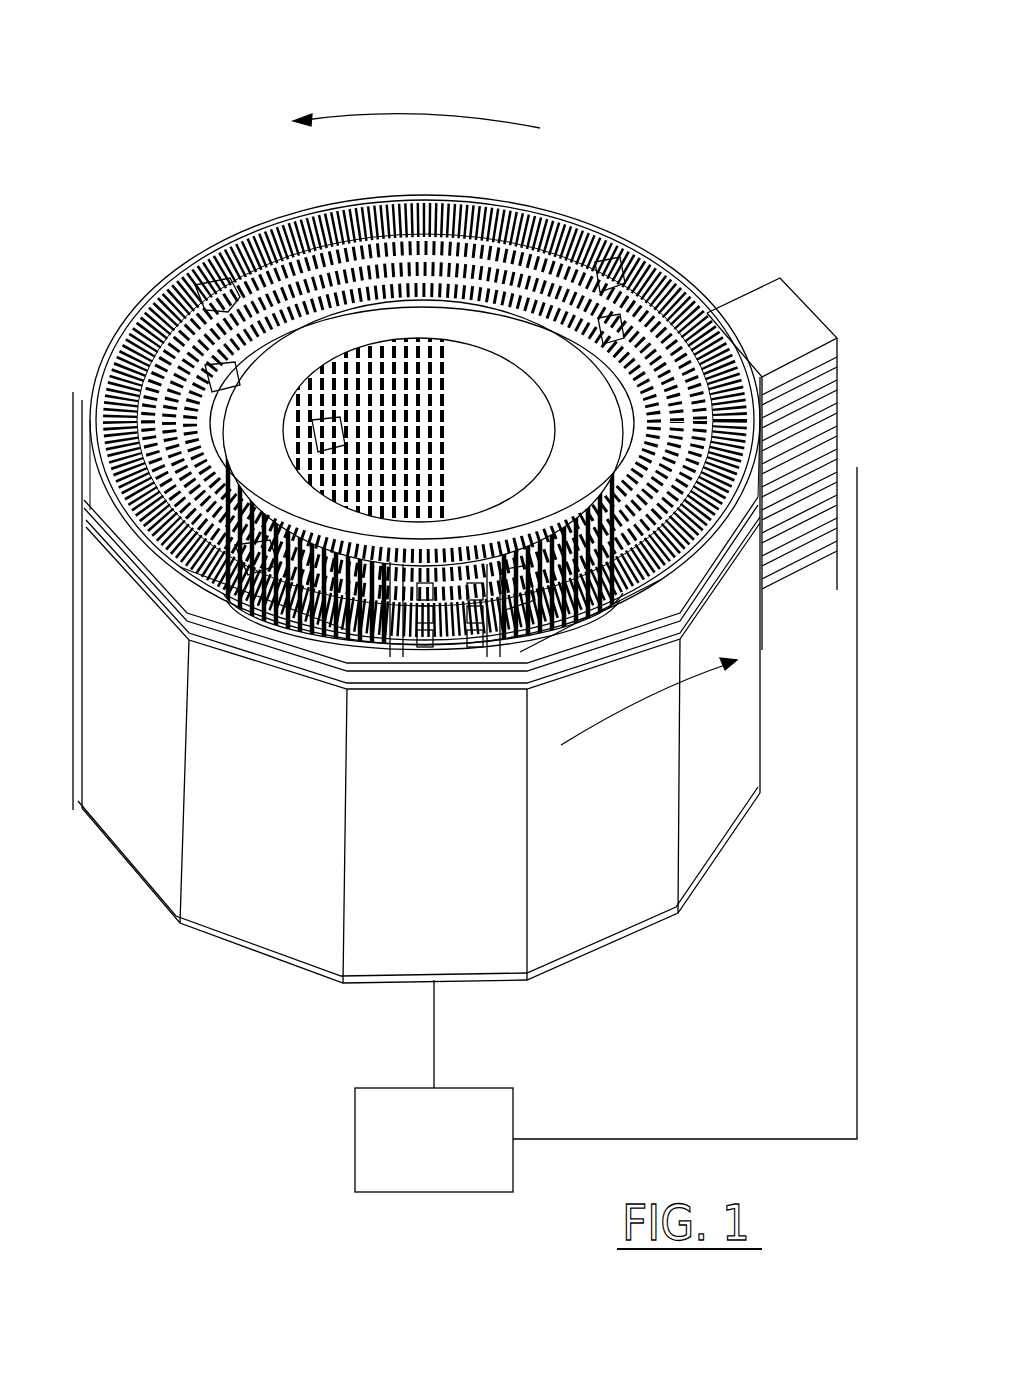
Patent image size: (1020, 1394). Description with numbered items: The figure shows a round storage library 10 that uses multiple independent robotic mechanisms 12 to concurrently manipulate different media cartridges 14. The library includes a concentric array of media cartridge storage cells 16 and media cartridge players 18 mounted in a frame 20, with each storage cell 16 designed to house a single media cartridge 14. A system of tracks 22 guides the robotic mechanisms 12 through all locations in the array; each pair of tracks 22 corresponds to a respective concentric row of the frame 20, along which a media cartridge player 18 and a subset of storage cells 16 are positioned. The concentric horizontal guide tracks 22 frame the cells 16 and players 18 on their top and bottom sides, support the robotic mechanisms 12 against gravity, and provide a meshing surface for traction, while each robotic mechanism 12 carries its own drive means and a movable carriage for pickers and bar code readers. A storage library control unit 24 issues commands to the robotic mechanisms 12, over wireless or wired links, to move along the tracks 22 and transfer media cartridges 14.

The round storage library 10 is at (712, 37).
The robotic mechanisms 12 is at (193, 268).
The media cartridges 14 is at (570, 222).
The media cartridge storage cells 16 is at (413, 199).
The media cartridge players 18 is at (840, 375).
The frame 20 is at (372, 937).
The tracks 22 is at (468, 207).
The storage library control unit 24 is at (355, 1131).